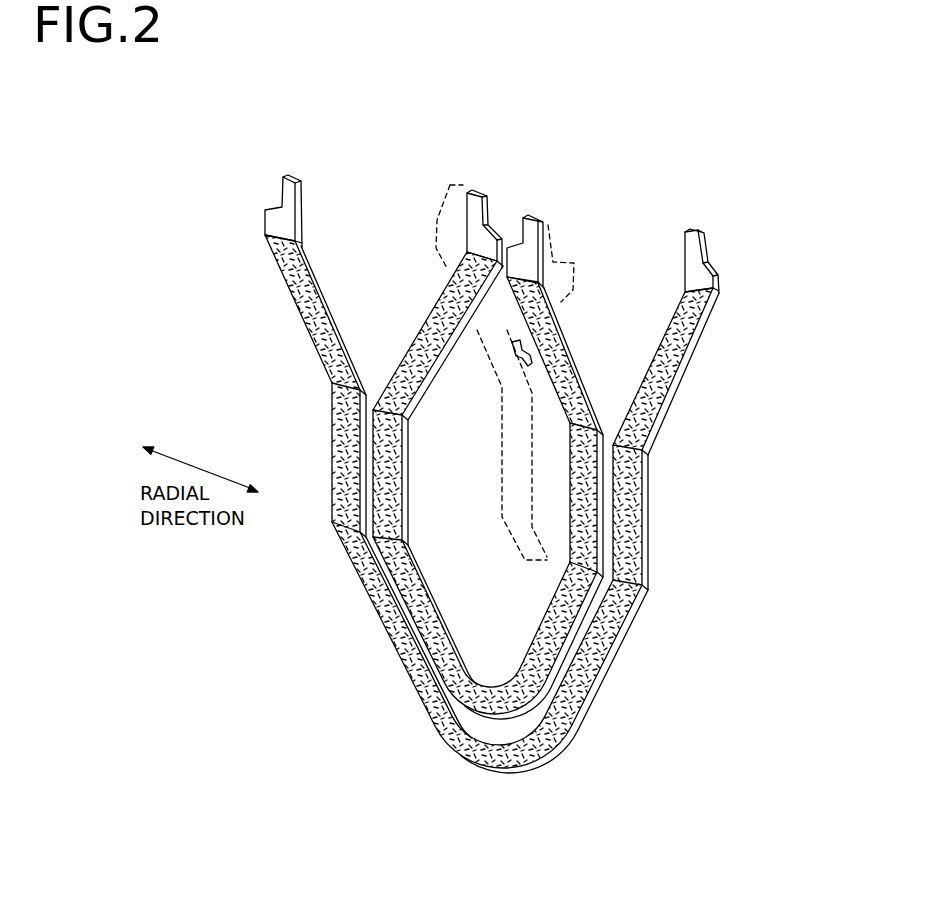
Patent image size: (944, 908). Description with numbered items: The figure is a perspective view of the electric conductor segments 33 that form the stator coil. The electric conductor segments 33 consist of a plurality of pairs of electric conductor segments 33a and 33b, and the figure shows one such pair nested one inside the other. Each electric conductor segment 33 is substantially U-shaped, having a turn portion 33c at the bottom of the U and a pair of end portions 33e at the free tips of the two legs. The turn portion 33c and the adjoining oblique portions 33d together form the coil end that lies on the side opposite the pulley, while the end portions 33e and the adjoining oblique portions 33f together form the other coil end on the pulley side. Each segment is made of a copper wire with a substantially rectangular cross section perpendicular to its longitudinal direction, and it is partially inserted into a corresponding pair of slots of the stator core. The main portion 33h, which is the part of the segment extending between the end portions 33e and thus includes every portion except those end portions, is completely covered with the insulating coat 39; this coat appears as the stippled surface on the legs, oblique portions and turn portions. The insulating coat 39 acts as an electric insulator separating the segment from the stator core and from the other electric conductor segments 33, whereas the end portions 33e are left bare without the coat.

The electric conductor segment 33 is at (352, 201).
The end portion 33e is at (288, 199).
The oblique portion 33f is at (577, 361).
The electric conductor segment 33a is at (345, 475).
The electric conductor segment 33b is at (387, 457).
The insulating coat 39 is at (627, 517).
The main portion 33h is at (632, 658).
The oblique portion 33d is at (432, 628).
The turn portion 33c is at (482, 702).